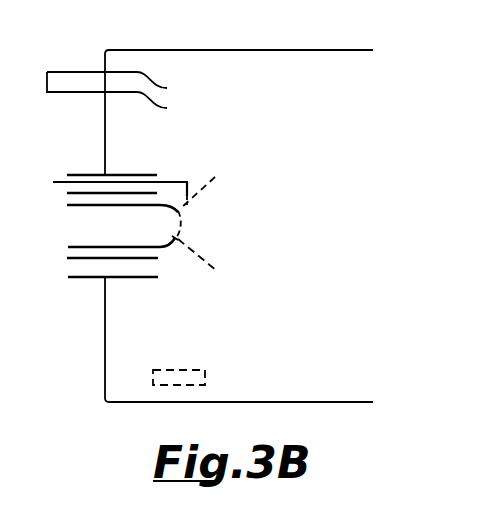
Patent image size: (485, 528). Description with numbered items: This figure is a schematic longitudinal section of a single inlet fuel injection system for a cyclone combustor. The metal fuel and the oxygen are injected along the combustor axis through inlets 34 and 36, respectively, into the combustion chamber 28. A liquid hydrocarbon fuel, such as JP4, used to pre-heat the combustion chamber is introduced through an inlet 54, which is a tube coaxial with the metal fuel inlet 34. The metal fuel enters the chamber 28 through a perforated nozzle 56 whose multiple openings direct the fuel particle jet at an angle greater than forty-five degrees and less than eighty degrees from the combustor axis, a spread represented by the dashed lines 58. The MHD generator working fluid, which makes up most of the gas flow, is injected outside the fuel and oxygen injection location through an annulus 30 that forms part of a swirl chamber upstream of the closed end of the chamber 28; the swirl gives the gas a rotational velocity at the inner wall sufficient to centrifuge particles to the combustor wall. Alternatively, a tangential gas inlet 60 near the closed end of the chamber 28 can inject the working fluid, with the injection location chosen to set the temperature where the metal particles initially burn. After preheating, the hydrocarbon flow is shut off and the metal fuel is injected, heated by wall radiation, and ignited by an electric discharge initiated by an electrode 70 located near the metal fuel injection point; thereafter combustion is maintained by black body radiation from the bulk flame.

The annulus 30 is at (82, 72).
The electrode 70 is at (178, 181).
The chamber 28 is at (260, 162).
The dashed lines 58 is at (194, 192).
The inlet 34 is at (83, 246).
The inlet 54 is at (75, 260).
The inlet 36 is at (95, 279).
The perforated nozzle 56 is at (174, 239).
The tangential gas inlet 60 is at (187, 370).